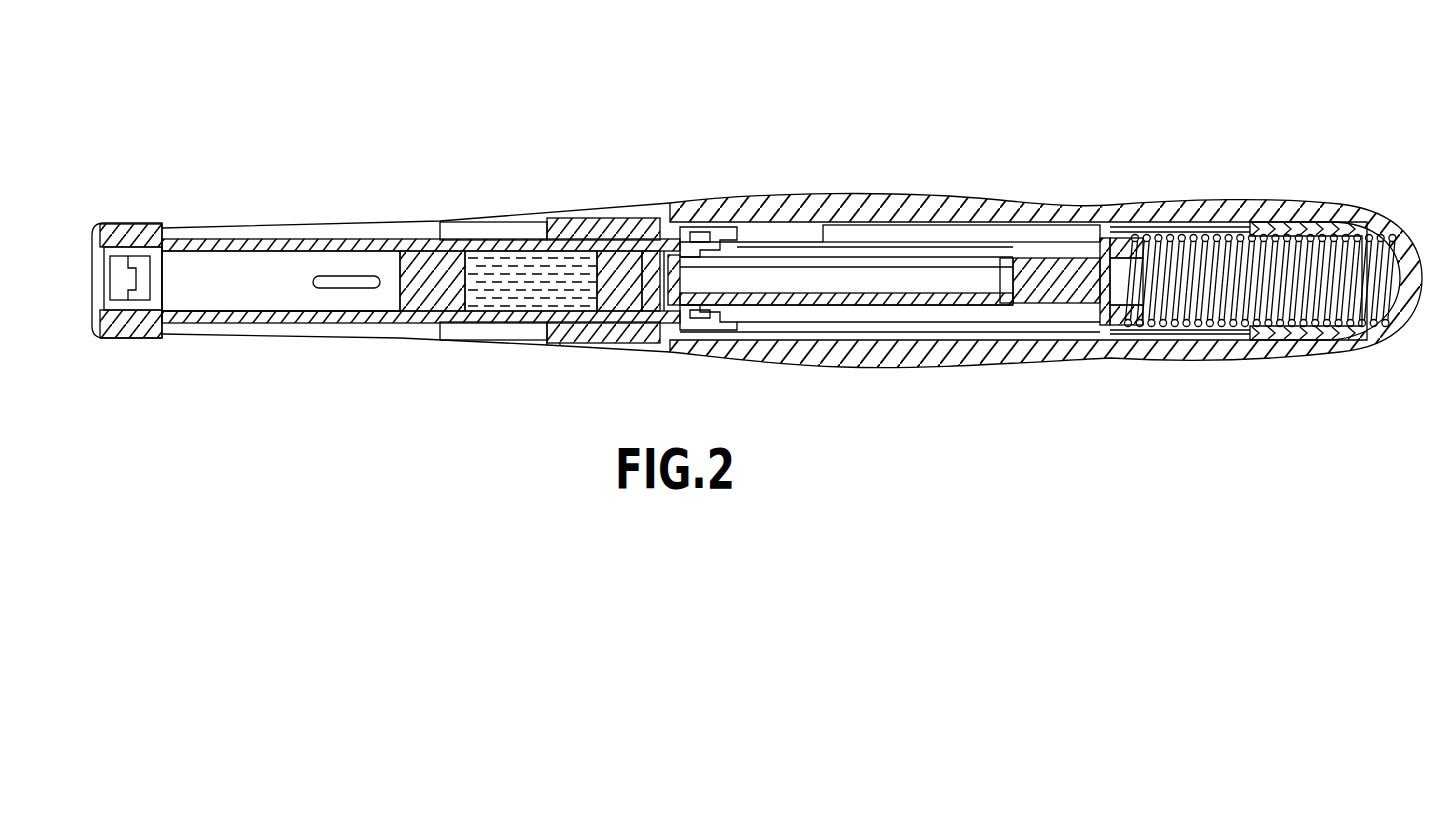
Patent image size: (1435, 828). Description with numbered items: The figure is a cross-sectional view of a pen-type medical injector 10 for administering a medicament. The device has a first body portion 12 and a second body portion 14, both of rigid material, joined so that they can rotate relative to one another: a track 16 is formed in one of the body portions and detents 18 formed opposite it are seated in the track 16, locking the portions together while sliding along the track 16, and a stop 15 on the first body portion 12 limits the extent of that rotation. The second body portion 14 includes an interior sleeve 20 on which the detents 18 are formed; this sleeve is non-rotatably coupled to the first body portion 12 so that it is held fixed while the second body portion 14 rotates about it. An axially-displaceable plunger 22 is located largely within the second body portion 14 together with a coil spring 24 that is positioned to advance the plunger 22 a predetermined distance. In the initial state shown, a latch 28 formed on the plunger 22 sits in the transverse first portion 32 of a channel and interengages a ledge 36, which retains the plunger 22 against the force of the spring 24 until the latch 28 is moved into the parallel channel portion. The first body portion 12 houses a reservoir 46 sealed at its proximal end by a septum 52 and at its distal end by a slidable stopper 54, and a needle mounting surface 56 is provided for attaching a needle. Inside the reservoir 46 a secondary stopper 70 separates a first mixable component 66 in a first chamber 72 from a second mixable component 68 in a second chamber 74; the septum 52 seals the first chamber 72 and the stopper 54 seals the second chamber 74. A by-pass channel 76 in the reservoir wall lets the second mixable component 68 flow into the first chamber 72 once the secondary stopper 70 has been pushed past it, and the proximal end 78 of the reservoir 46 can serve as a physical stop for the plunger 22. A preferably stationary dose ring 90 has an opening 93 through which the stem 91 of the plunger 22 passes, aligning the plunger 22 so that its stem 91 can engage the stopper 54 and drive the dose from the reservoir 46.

The medical injector 10 is at (882, 107).
The first body portion 12 is at (506, 218).
The second body portion 14 is at (950, 197).
The stop 15 is at (612, 327).
The track 16 is at (561, 346).
The detent 18 is at (542, 348).
The interior sleeve 20 is at (794, 210).
The plunger 22 is at (932, 306).
The spring 24 is at (1214, 342).
The latch 28 is at (1097, 208).
The first portion of channel 32 is at (1090, 252).
The ledge 36 is at (1077, 257).
The reservoir 46 is at (318, 239).
The septum 52 is at (104, 258).
The stopper 54 is at (625, 240).
The needle mounting surface 56 is at (120, 252).
The first mixable component 66 is at (232, 282).
The second mixable component 68 is at (500, 298).
The secondary stopper 70 is at (432, 313).
The first chamber 72 is at (302, 312).
The second chamber 74 is at (560, 250).
The by-pass channel 76 is at (362, 289).
The proximal end of the reservoir 78 is at (717, 227).
The dose ring 90 is at (690, 332).
The stem 91 is at (872, 306).
The opening 93 is at (710, 318).